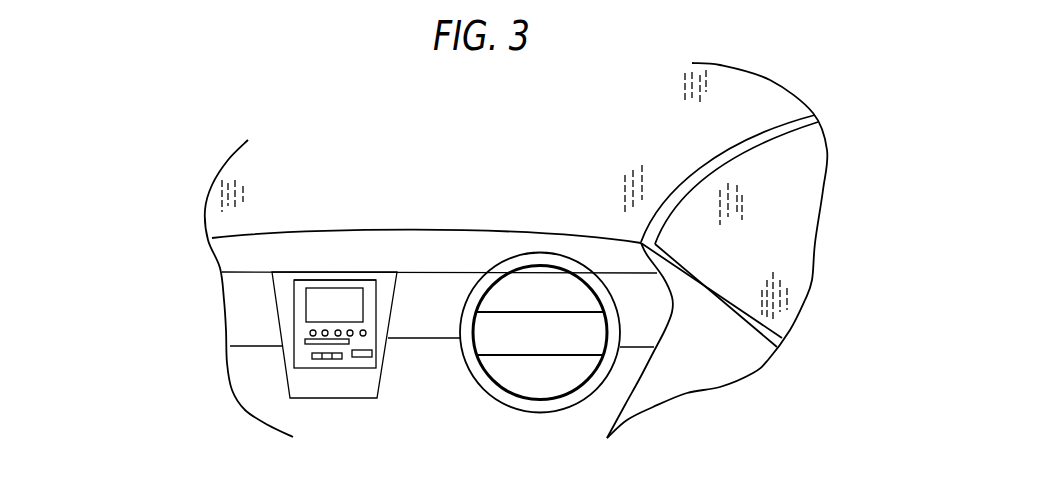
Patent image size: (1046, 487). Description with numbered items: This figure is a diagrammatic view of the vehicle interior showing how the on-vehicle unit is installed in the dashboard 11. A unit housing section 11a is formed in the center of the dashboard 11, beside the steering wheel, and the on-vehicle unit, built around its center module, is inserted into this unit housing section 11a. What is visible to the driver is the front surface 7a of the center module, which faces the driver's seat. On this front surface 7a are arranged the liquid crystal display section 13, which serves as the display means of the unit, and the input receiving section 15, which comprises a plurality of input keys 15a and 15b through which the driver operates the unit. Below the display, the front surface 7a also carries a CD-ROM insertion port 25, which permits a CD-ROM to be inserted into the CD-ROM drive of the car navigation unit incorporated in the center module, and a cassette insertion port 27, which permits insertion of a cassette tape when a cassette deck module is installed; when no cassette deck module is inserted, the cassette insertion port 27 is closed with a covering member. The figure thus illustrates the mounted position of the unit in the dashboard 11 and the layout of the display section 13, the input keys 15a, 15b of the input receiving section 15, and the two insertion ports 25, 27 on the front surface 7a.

The front surface 7a is at (370, 313).
The dashboard 11 is at (417, 243).
The unit housing section 11a is at (335, 277).
The liquid crystal display section 13 is at (317, 300).
The input receiving section 15 is at (248, 345).
The input keys 15a is at (311, 332).
The input keys 15b is at (311, 355).
The CD-ROM insertion port 25 is at (348, 340).
The cassette insertion port 27 is at (365, 357).